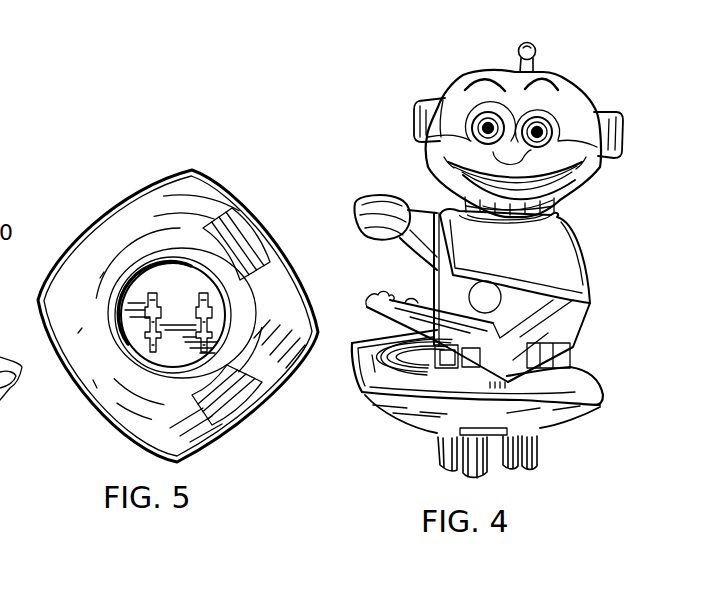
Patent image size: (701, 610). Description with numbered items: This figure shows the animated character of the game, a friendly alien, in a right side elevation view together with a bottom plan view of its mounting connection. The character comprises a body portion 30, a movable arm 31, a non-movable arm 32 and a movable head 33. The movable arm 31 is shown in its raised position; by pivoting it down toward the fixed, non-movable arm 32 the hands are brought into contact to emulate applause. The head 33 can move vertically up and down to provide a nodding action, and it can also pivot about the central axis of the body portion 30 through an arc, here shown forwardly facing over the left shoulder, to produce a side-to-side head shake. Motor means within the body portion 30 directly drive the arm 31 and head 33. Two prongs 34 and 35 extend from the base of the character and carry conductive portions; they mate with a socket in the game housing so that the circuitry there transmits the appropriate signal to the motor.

In FIG. 4, the body portion 30 is at (572, 231).
In FIG. 4, the movable arm 31 is at (413, 210).
In FIG. 4, the non-movable arm 32 is at (570, 358).
In FIG. 4, the movable head 33 is at (467, 78).
In FIG. 4, the prong 34 is at (443, 465).
In FIG. 5, the prong 35 is at (145, 328).
In FIG. 4, the prong 35 is at (537, 455).